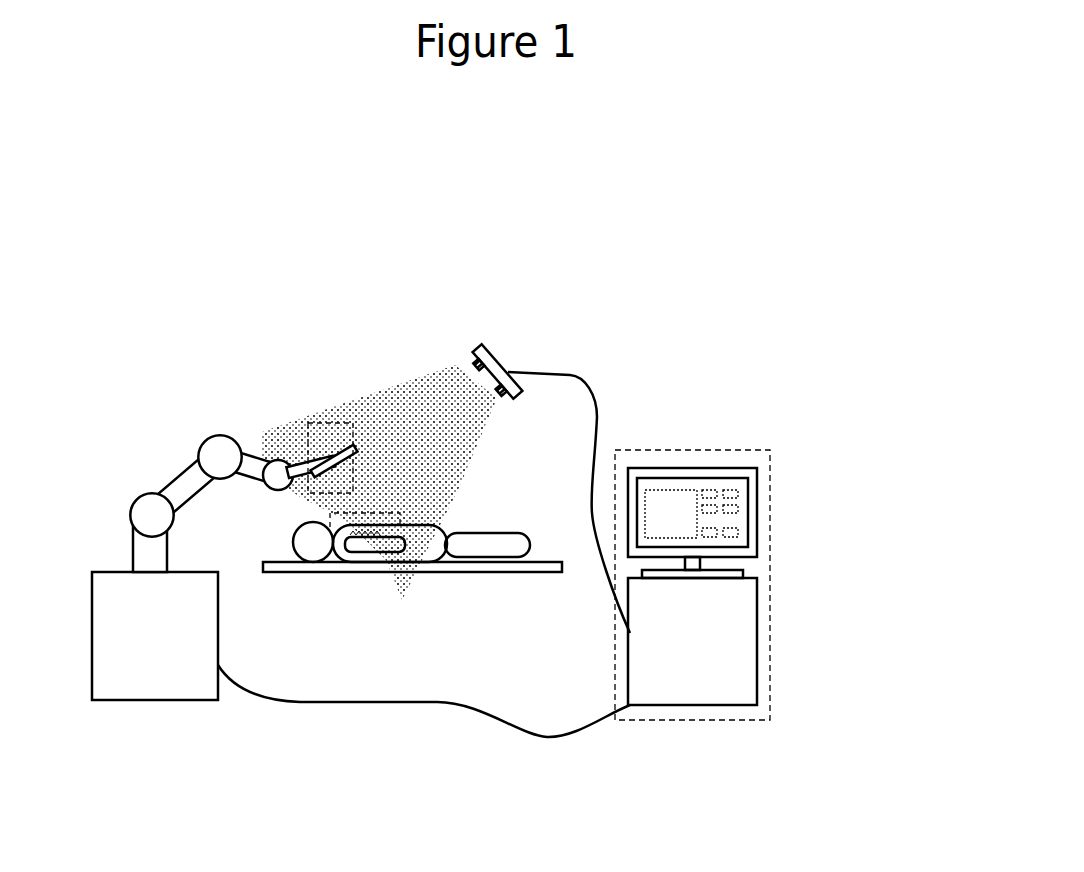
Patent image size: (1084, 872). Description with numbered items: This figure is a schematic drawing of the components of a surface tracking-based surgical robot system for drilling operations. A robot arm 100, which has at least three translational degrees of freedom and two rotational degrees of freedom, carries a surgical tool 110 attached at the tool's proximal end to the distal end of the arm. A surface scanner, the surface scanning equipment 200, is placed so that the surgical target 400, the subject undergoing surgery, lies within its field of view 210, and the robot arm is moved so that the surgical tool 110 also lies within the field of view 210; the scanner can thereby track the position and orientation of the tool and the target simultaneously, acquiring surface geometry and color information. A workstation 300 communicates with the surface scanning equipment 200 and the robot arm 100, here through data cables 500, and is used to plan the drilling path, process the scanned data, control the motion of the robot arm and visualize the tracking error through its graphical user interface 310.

The robot arm 100 is at (163, 480).
The surgical tool 110 is at (328, 425).
The surface scanning equipment 200 is at (490, 352).
The field of view 210 is at (430, 410).
The workstation 300 is at (787, 585).
The graphical user interface 310 is at (722, 523).
The surgical target 400 is at (343, 563).
The data cables 500 is at (607, 580).